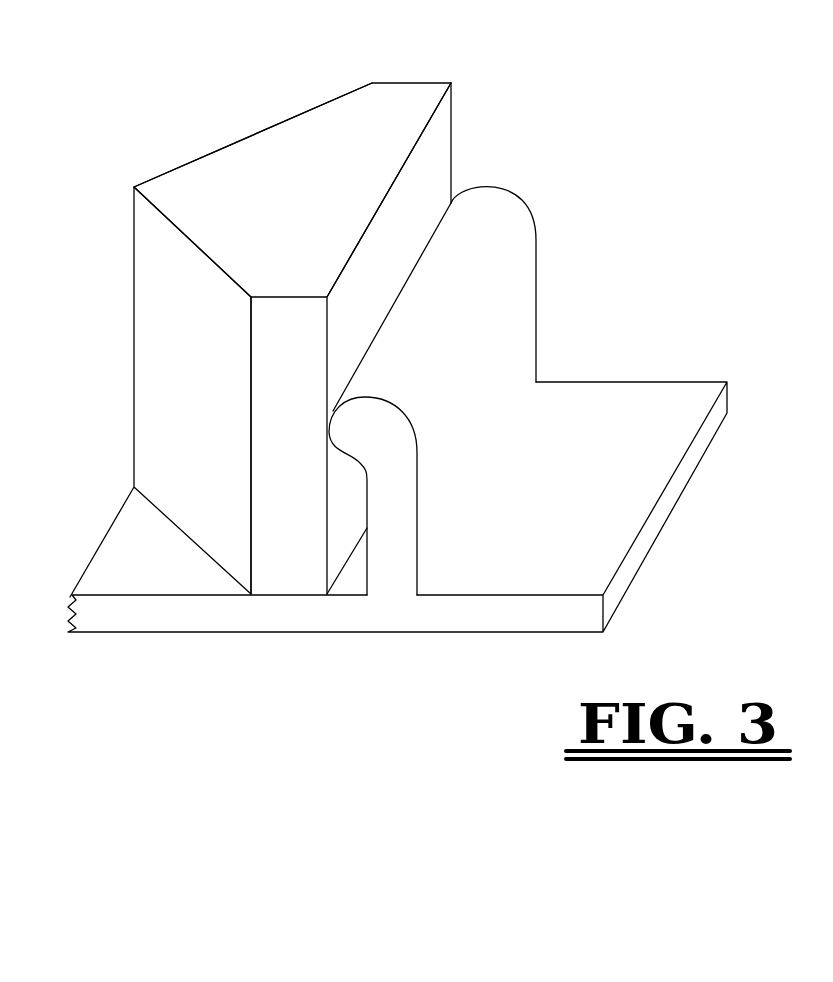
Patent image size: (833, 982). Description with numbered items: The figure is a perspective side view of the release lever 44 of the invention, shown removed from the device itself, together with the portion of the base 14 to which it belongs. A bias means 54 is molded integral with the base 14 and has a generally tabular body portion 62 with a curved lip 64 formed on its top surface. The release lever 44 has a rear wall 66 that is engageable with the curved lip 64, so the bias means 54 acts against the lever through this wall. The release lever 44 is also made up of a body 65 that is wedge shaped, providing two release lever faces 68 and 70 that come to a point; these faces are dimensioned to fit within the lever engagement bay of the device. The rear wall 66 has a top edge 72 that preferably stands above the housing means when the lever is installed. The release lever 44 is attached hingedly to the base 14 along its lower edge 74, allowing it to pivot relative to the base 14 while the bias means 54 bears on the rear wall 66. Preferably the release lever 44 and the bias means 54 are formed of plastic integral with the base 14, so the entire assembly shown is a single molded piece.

The base 14 is at (640, 538).
The release lever 44 is at (560, 348).
The bias means 54 is at (465, 300).
The tabular body portion 62 is at (390, 595).
The curved lip 64 is at (428, 246).
The body 65 is at (292, 165).
The rear wall 66 is at (440, 115).
The release lever face 68 is at (143, 357).
The release lever face 70 is at (197, 158).
The top edge 72 is at (402, 173).
The lower edge 74 is at (340, 570).